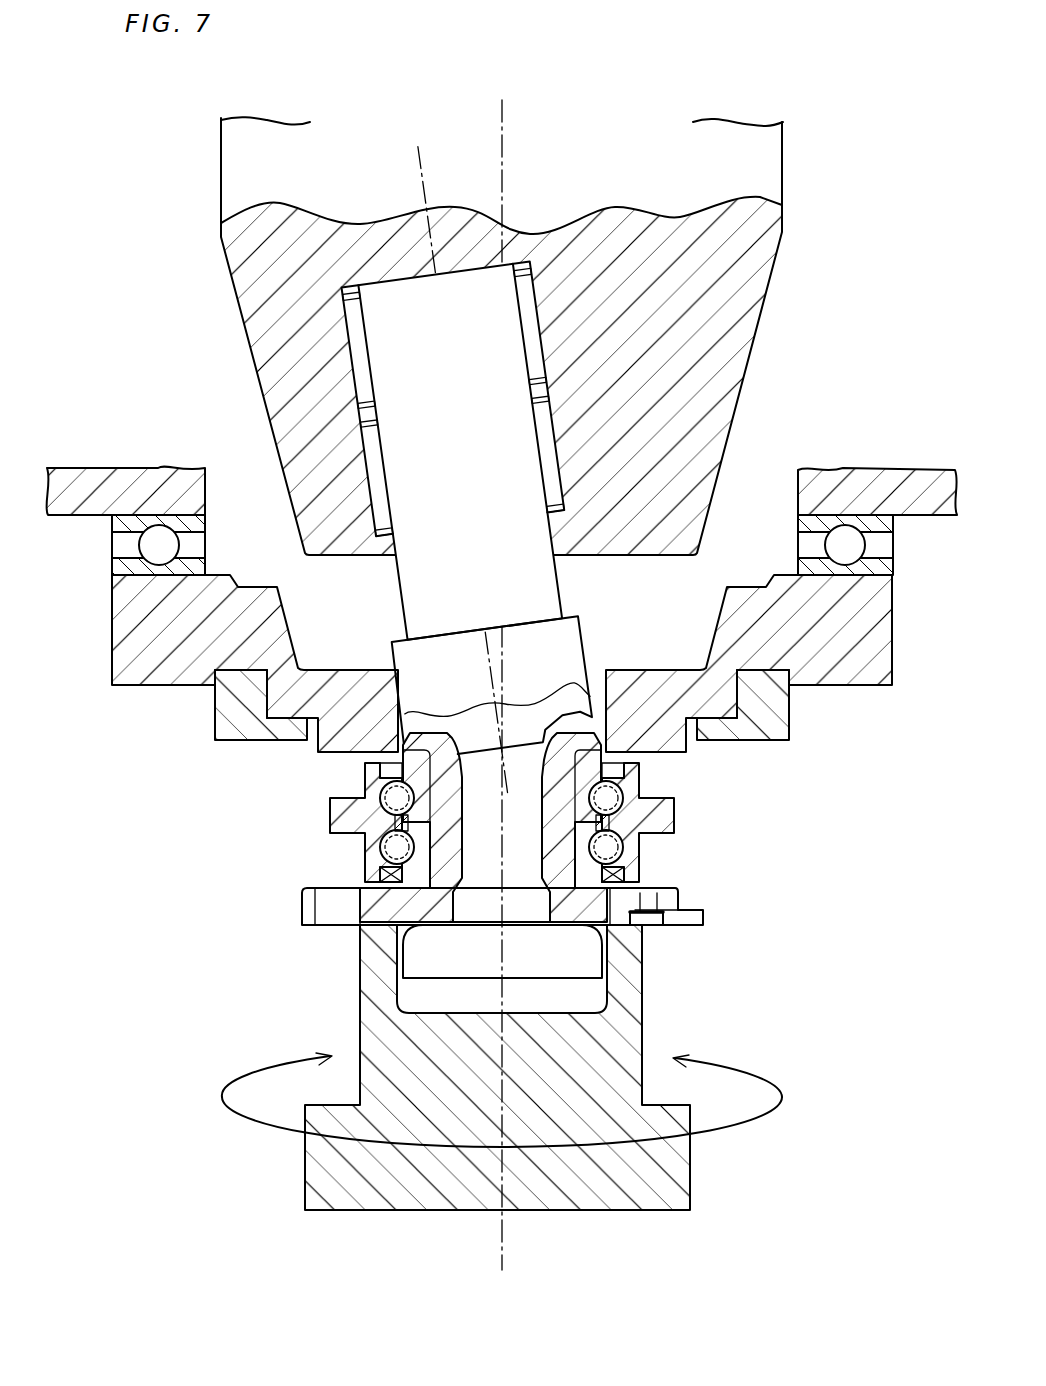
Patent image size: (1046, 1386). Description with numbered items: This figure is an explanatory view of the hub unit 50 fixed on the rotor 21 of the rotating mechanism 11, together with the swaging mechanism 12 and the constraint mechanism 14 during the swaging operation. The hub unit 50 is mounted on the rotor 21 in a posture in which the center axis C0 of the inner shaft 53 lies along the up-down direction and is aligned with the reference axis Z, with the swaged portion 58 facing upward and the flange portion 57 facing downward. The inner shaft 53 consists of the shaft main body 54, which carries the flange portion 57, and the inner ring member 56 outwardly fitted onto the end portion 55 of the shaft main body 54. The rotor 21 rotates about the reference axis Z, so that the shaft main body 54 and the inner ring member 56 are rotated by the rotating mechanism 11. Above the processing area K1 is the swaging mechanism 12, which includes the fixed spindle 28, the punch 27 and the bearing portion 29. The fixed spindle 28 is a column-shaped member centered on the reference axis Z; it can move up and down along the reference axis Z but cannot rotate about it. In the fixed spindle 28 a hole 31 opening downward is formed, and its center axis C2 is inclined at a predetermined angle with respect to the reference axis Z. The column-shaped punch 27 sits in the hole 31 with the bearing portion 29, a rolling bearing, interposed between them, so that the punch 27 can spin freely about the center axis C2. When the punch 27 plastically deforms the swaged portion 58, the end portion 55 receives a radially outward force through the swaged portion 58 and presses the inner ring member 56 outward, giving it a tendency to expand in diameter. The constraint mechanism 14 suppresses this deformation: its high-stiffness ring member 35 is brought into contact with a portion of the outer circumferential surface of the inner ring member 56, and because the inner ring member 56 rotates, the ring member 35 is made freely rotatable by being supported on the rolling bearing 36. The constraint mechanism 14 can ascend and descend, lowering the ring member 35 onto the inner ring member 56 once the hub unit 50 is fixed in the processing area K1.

The rotating mechanism 11 is at (358, 1031).
The swaging mechanism 12 is at (742, 450).
The constraint mechanism 14 is at (860, 690).
The rotor 21 is at (590, 1045).
The punch 27 is at (563, 667).
The fixed spindle 28 is at (745, 222).
The bearing portion 29 is at (530, 318).
The hole 31 is at (557, 408).
The ring member 35 is at (340, 730).
The rolling bearing 36 is at (108, 549).
The hub unit 50 is at (322, 822).
The inner shaft 53 is at (440, 927).
The shaft main body 54 is at (587, 900).
The end portion 55 is at (560, 795).
The inner ring member 56 is at (398, 762).
The flange portion 57 is at (302, 925).
The swaged portion 58 is at (630, 752).
The center axis of the inner shaft C0 is at (503, 962).
The center axis of the hole C2 is at (416, 176).
The processing area K1 is at (290, 906).
The reference axis Z is at (510, 1240).